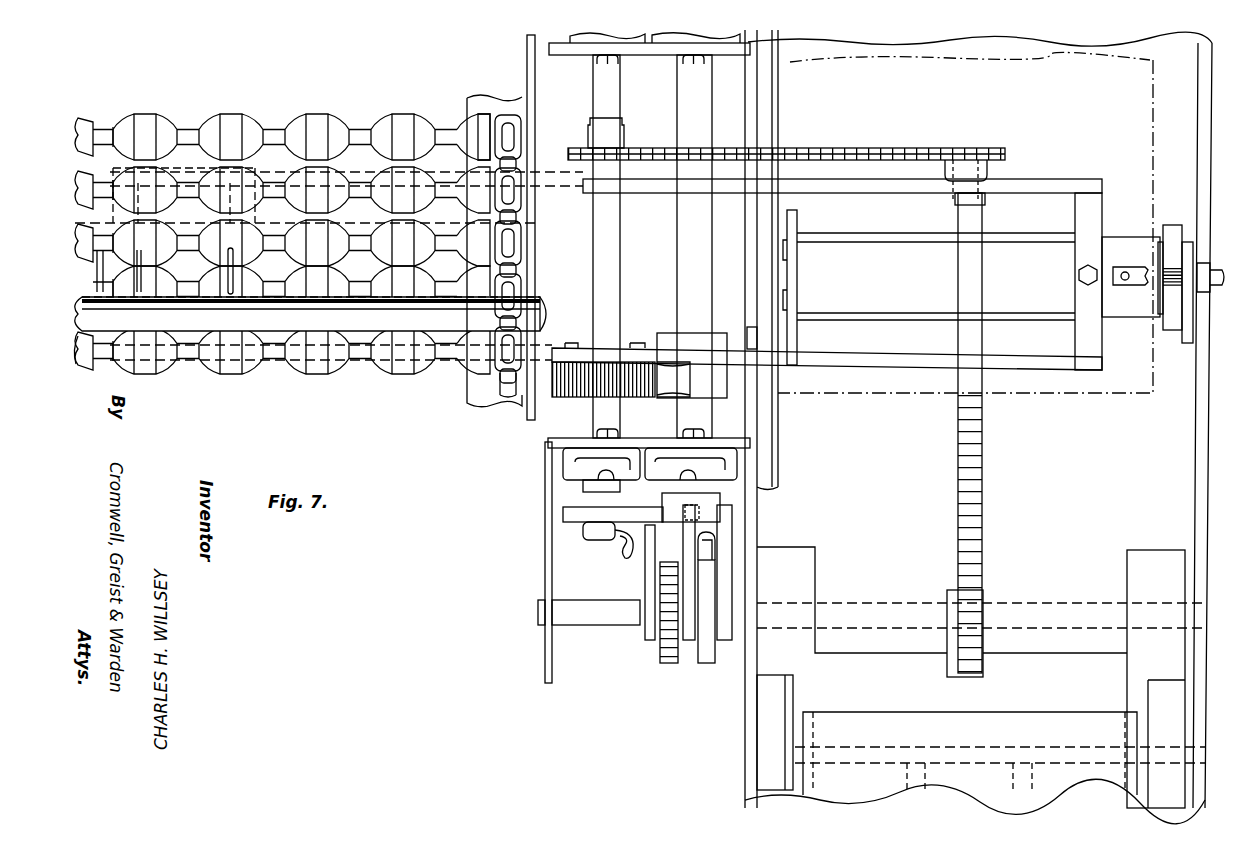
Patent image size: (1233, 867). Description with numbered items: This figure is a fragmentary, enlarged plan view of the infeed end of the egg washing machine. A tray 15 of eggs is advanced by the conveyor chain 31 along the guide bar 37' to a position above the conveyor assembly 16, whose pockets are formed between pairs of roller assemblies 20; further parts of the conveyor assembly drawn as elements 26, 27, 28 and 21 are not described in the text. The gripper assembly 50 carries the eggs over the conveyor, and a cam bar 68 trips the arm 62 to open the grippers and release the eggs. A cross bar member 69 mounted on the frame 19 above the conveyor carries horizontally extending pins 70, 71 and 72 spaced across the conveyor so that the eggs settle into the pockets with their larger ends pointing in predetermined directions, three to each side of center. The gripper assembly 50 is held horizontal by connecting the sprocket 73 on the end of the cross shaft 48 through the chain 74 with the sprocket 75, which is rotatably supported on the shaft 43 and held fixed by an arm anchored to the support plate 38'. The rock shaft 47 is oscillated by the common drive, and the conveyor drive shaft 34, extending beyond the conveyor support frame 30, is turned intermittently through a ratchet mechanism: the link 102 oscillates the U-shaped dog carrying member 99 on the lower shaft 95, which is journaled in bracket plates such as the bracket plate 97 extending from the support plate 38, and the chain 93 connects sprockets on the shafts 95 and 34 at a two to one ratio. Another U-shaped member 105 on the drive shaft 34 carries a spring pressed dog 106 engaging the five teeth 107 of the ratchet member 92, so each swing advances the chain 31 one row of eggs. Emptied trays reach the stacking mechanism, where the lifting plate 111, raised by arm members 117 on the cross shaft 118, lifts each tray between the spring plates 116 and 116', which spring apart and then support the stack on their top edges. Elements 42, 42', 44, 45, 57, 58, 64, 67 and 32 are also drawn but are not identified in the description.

The conveyor assembly 16 is at (104, 103).
The bobbin 26 is at (183, 122).
The roller assemblies 20 is at (90, 143).
The pin 72 is at (362, 278).
The pin 71 is at (226, 266).
The pin 70 is at (90, 275).
The cross bar member 69 is at (76, 333).
The bobbin spindle end 27 is at (480, 125).
The side plate 28 is at (471, 100).
The conveyor chain 21 is at (502, 110).
The frame 19 is at (536, 112).
The support plate 38' is at (649, 57).
The shaft 43 is at (618, 230).
The sprocket 75 is at (624, 137).
The rock shaft 47 is at (677, 262).
The chain 74 is at (839, 152).
The sprocket 73 is at (988, 176).
The upper carriage bar 42' is at (842, 202).
The conveyor chain 31 is at (988, 504).
The rack guide 32 is at (984, 670).
The guide bar 37' is at (978, 419).
The cam bar 68 is at (750, 328).
The gear 45 is at (628, 400).
The lower carriage bar 42 is at (827, 350).
The gripper assembly 50 is at (861, 328).
The cross shaft 48 is at (980, 322).
The end block 44 is at (1100, 222).
The key 67 is at (1130, 287).
The disc 57 is at (1172, 225).
The flange 58 is at (1162, 322).
The arm 62 is at (1187, 345).
The nut 64 is at (1207, 292).
The conveyor support frame 30 is at (1209, 115).
The tray 15 is at (1140, 393).
The support plate 38 is at (649, 430).
The bracket plate 97 is at (545, 558).
The U-shaped dog carrying member 105 is at (733, 520).
The link 102 is at (616, 542).
The U-shaped dog carrying member 99 is at (645, 592).
The chain 93 is at (668, 664).
The teeth 107 is at (715, 590).
The ratchet member 92 is at (706, 664).
The spring pressed dog 106 is at (712, 550).
The shaft 95 is at (580, 626).
The conveyor drive shaft 34 is at (866, 604).
The stack supporting spring plate 116 is at (776, 718).
The stack supporting spring plate 116' is at (1156, 679).
The lifting plate 111 is at (890, 713).
The cross shaft 118 is at (1060, 748).
The arm members 117 is at (1013, 780).